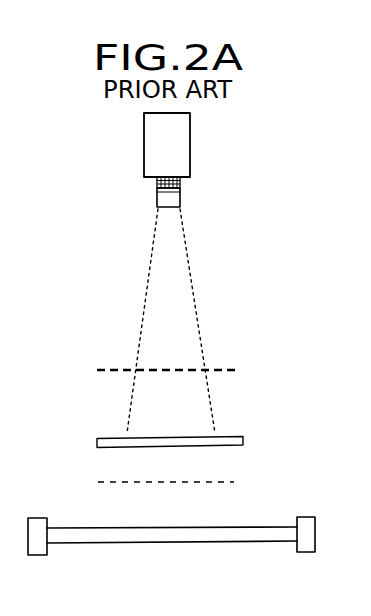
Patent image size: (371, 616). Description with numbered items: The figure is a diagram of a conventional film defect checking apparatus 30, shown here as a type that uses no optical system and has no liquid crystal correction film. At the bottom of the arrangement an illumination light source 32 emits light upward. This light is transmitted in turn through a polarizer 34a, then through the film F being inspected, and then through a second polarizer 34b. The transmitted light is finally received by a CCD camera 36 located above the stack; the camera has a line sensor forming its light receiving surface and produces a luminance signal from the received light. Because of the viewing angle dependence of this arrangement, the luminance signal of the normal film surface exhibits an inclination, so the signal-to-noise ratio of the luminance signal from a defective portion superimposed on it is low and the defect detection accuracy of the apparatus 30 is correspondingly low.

The film defect checking apparatus 30 is at (275, 237).
The illumination light source 32 is at (63, 543).
The polarizer 34a is at (240, 482).
The polarizer 34b is at (240, 370).
The CCD camera 36 is at (183, 142).
The film F is at (97, 440).